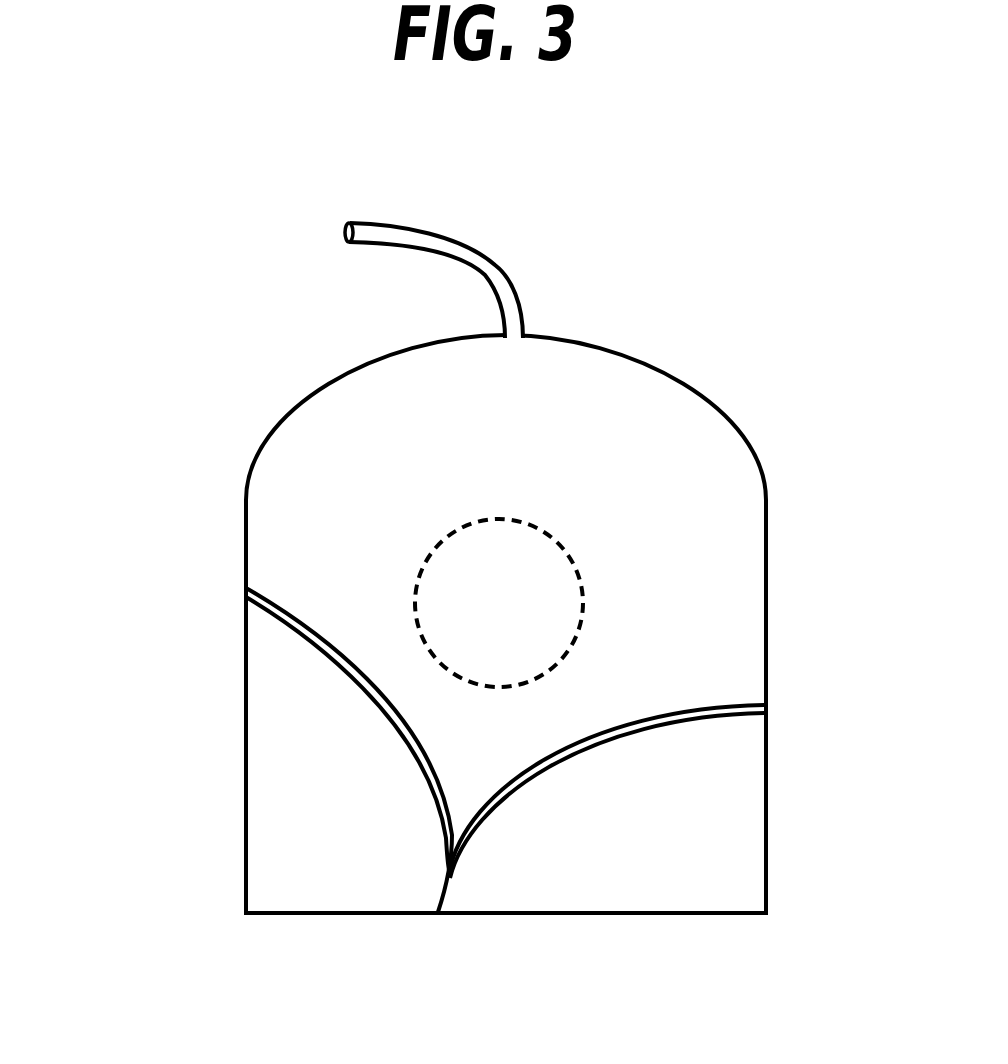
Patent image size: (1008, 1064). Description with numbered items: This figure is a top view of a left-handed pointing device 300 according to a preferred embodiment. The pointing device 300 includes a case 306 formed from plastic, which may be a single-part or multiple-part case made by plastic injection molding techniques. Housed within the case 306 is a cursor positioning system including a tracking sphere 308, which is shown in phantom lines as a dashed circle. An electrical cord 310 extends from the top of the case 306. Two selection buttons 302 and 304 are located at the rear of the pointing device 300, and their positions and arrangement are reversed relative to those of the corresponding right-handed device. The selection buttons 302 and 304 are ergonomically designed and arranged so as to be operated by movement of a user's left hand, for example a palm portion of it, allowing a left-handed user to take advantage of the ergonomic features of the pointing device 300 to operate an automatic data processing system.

The pointing device 300 is at (748, 151).
The selection button 302 is at (327, 812).
The selection button 304 is at (722, 767).
The case 306 is at (725, 413).
The tracking sphere 308 is at (570, 560).
The electrical cord 310 is at (425, 225).